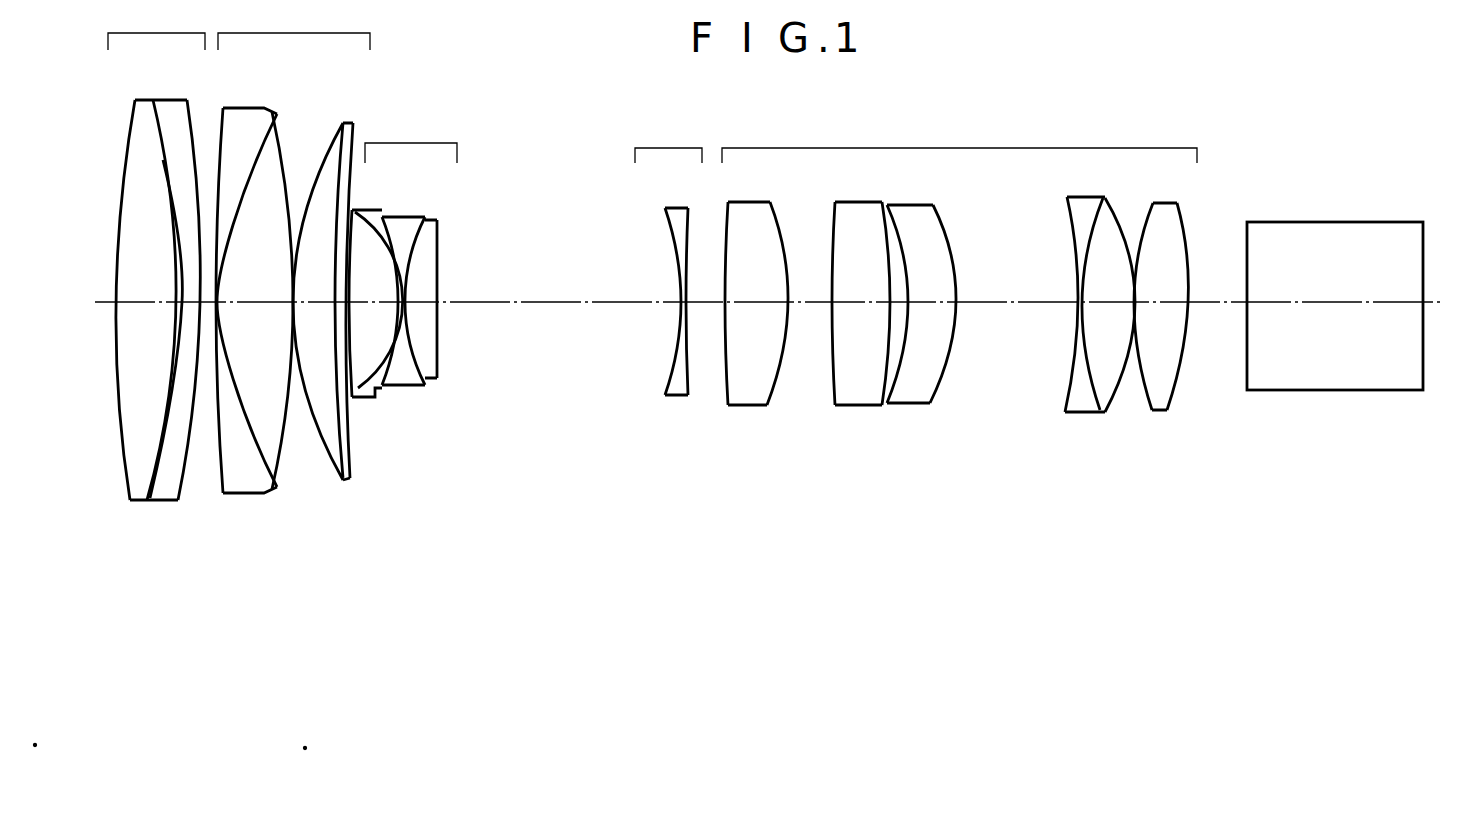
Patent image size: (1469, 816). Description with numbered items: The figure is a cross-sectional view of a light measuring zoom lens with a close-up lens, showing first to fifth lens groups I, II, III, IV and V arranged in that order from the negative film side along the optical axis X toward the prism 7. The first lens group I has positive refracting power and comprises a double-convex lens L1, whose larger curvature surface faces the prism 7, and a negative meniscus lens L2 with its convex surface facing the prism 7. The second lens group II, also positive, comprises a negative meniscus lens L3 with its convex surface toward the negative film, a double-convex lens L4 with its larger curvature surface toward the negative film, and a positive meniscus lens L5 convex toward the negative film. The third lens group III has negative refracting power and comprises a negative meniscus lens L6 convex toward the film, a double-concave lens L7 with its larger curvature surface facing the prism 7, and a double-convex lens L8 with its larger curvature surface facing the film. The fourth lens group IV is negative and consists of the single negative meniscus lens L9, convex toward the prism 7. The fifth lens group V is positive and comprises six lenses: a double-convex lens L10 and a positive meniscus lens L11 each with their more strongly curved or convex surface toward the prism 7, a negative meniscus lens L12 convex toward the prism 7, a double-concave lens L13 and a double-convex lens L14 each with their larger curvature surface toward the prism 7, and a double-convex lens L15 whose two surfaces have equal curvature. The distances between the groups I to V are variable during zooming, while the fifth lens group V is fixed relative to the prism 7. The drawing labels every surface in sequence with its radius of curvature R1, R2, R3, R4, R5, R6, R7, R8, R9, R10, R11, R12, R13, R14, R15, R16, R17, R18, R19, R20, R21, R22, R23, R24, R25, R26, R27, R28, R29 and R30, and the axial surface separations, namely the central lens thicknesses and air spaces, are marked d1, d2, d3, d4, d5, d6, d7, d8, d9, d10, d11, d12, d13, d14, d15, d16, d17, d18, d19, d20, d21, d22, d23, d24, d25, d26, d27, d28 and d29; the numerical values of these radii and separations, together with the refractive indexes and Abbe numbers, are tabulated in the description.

The first lens group I is at (156, 28).
The second lens group II is at (294, 28).
The third lens group III is at (411, 140).
The fourth lens group IV is at (668, 142).
The fifth lens group V is at (959, 143).
The lens L1 is at (136, 308).
The lens L2 is at (179, 315).
The lens L3 is at (232, 312).
The lens L4 is at (276, 305).
The lens L5 is at (324, 306).
The lens L6 is at (380, 339).
The lens L7 is at (432, 310).
The lens L8 is at (473, 291).
The lens L9 is at (647, 312).
The lens L10 is at (737, 314).
The lens L11 is at (871, 312).
The lens L12 is at (947, 305).
The lens L13 is at (1054, 309).
The lens L14 is at (1098, 324).
The lens L15 is at (1171, 336).
The radius of curvature of lens surface R1 is at (127, 473).
The radius of curvature of lens surface R2 is at (155, 498).
The radius of curvature of lens surface R3 is at (171, 500).
The radius of curvature of lens surface R4 is at (188, 467).
The radius of curvature of lens surface R5 is at (250, 445).
The radius of curvature of lens surface R6 is at (278, 465).
The radius of curvature of lens surface R7 is at (292, 462).
The radius of curvature of lens surface R8 is at (336, 470).
The radius of curvature of lens surface R9 is at (352, 432).
The radius of curvature of lens surface R10 is at (378, 400).
The radius of curvature of lens surface R11 is at (396, 362).
The radius of curvature of lens surface R12 is at (412, 385).
The radius of curvature of lens surface R13 is at (440, 366).
The radius of curvature of lens surface R14 is at (438, 338).
The radius of curvature of lens surface R15 is at (666, 372).
The radius of curvature of lens surface R16 is at (690, 405).
The radius of curvature of lens surface R17 is at (722, 410).
The radius of curvature of lens surface R18 is at (772, 408).
The radius of curvature of lens surface R19 is at (835, 400).
The radius of curvature of lens surface R20 is at (890, 330).
The radius of curvature of lens surface R21 is at (932, 398).
The radius of curvature of lens surface R22 is at (953, 362).
The radius of curvature of lens surface R23 is at (1068, 362).
The radius of curvature of lens surface R24 is at (1074, 404).
The radius of curvature of lens surface R25 is at (1100, 418).
The radius of curvature of lens surface R26 is at (1130, 378).
The radius of curvature of lens surface R27 is at (1150, 410).
The radius of curvature of lens surface R28 is at (1180, 387).
The radius of curvature of surface R29 is at (1247, 390).
The radius of curvature of surface R30 is at (1423, 390).
The axial surface separation d1 is at (142, 287).
The axial surface separation d2 is at (170, 300).
The axial surface separation d3 is at (200, 305).
The axial surface separation d4 is at (208, 312).
The axial surface separation d5 is at (215, 307).
The axial surface separation d6 is at (252, 289).
The axial surface separation d7 is at (282, 292).
The axial surface separation d8 is at (310, 290).
The axial surface separation d9 is at (342, 305).
The axial surface separation d10 is at (355, 295).
The axial surface separation d11 is at (377, 320).
The axial surface separation d12 is at (405, 300).
The axial surface separation d13 is at (428, 308).
The axial surface separation d14 is at (555, 290).
The axial surface separation d15 is at (680, 298).
The axial surface separation d16 is at (682, 318).
The axial surface separation d17 is at (754, 290).
The axial surface separation d18 is at (813, 290).
The axial surface separation d19 is at (865, 290).
The axial surface separation d20 is at (900, 303).
The axial surface separation d21 is at (933, 293).
The axial surface separation d22 is at (1009, 293).
The axial surface separation d23 is at (1077, 310).
The axial surface separation d24 is at (1085, 300).
The axial surface separation d25 is at (1112, 310).
The axial surface separation d26 is at (1137, 303).
The axial surface separation d27 is at (1163, 292).
The axial surface separation d28 is at (1212, 292).
The axial surface separation d29 is at (1333, 293).
The prism 7 is at (1316, 222).
The optical axis X is at (1438, 302).